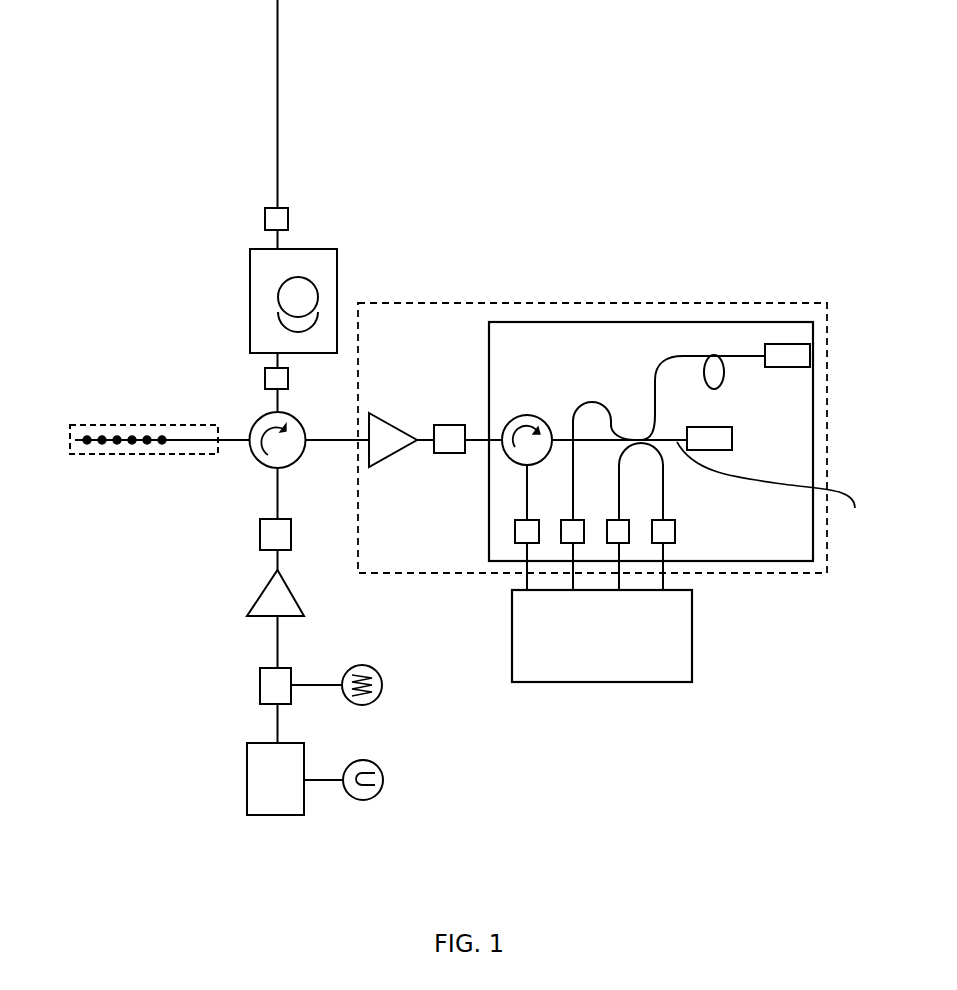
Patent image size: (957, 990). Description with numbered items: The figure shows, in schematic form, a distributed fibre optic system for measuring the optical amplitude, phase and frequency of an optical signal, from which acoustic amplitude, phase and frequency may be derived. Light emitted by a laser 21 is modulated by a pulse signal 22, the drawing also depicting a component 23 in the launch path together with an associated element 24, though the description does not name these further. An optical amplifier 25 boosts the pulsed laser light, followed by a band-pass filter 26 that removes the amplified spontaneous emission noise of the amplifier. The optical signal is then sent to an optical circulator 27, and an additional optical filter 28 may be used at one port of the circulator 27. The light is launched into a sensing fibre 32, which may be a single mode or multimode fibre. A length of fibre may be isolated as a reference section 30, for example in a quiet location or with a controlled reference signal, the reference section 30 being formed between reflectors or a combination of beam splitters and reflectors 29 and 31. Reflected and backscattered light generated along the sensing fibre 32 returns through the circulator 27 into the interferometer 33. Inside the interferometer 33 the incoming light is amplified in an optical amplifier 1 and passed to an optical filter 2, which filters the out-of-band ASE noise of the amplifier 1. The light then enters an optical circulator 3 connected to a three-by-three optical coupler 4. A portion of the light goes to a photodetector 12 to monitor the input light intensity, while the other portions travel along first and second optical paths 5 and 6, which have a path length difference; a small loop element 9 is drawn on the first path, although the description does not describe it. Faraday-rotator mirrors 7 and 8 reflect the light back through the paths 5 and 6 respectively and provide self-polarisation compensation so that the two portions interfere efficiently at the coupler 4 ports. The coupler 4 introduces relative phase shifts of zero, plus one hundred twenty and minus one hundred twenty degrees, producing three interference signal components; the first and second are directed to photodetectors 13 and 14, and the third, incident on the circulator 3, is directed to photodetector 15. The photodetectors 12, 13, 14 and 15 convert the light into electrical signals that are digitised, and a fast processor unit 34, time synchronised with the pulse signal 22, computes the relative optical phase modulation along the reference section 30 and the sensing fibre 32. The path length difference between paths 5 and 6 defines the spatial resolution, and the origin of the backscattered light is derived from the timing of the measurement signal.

The optical amplifier 1 is at (392, 458).
The optical filter 2 is at (450, 453).
The optical circulator 3 is at (527, 414).
The 3×3 optical coupler 4 is at (635, 437).
The first optical path 5 is at (675, 354).
The second optical path 6 is at (770, 489).
The Faraday-rotator mirror 7 is at (790, 344).
The Faraday-rotator mirror 8 is at (732, 438).
The ring resonator 9 is at (714, 355).
The photodetector 12 is at (675, 530).
The photodetector 13 is at (629, 541).
The photodetector 14 is at (561, 541).
The photodetector 15 is at (515, 528).
The laser 21 is at (277, 815).
The pulse signal 22 is at (363, 800).
The modulator 23 is at (260, 690).
The signal generator 24 is at (375, 700).
The optical amplifier 25 is at (253, 600).
The band-pass filter 26 is at (260, 535).
The optical circulator 27 is at (252, 460).
The optical filter 28 is at (138, 425).
The reflector or beam splitter 29 is at (265, 378).
The reference section 30 is at (250, 300).
The reflector or beam splitter 31 is at (265, 220).
The sensing fibre 32 is at (277, 145).
The interferometer 33 is at (418, 303).
The fast processor unit 34 is at (512, 640).